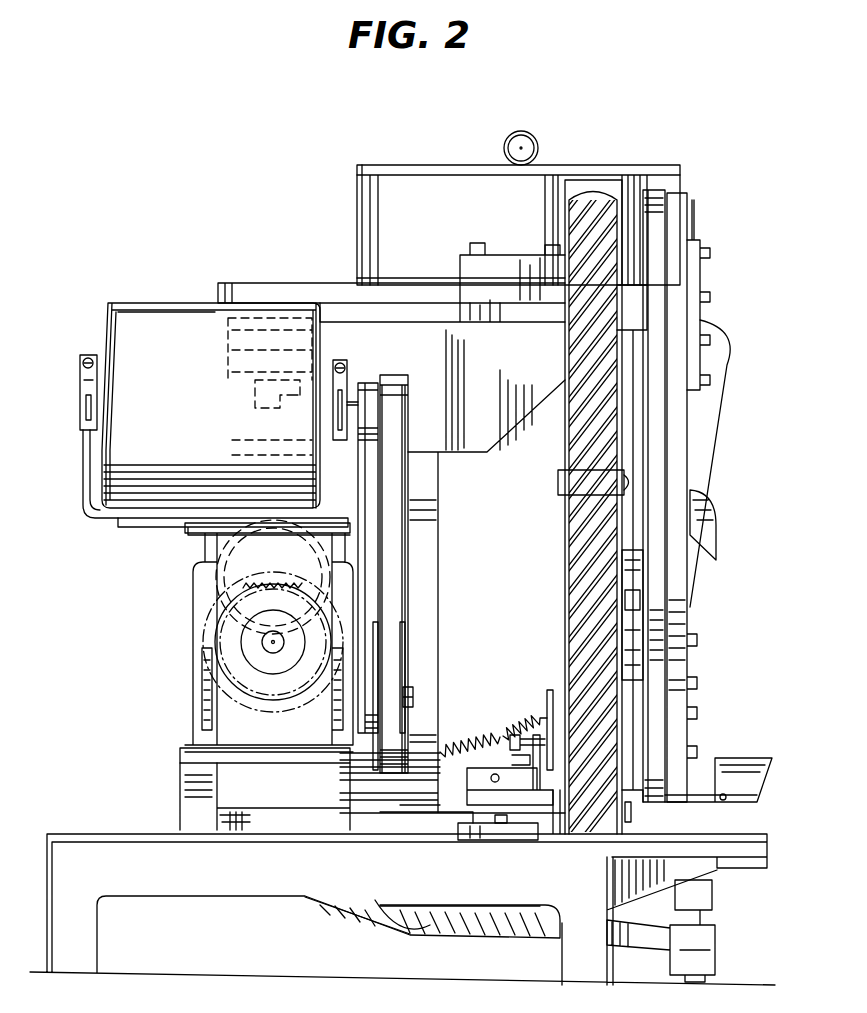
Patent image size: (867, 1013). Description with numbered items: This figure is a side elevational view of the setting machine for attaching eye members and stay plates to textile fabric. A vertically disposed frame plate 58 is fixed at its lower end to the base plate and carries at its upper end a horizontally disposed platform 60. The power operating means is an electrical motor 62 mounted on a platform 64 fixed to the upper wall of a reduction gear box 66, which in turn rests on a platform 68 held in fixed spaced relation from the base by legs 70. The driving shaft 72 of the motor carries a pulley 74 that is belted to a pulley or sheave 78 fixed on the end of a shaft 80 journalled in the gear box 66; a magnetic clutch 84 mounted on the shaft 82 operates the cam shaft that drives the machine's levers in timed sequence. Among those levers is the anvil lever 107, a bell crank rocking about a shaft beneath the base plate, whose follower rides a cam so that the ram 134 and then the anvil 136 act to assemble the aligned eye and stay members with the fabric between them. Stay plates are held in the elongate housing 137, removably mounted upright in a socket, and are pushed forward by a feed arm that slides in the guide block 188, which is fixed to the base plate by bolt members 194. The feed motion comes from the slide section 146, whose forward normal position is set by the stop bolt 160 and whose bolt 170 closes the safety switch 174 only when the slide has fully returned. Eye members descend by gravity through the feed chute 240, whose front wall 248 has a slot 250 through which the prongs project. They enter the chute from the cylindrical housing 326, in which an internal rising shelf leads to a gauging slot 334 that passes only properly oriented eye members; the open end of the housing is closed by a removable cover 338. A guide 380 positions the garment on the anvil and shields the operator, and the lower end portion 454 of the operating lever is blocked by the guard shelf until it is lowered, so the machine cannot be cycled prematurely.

The cylindrical housing 326 is at (352, 206).
The removable cover 338 is at (416, 166).
The slot 334 is at (690, 195).
The platform 60 is at (466, 306).
The electrical motor 62 is at (190, 380).
The driving shaft 72 is at (354, 403).
The pulley 74 is at (404, 438).
The ram 134 is at (702, 422).
The feed chute 240 is at (676, 474).
The elongate housing 137 is at (560, 533).
The frame plate 58 is at (428, 580).
The slot 250 is at (662, 578).
The platform 64 is at (130, 528).
The reduction gear box 66 is at (220, 578).
The shaft 82 is at (270, 641).
The magnetic clutch 84 is at (210, 627).
The pulley or sheave 78 is at (403, 642).
The shaft 80 is at (418, 692).
The front wall 248 is at (660, 664).
The switch 174 is at (546, 696).
The bolt 170 is at (500, 730).
The slide section 146 is at (458, 765).
The stop bolt 160 is at (510, 758).
The guide 380 is at (755, 757).
The platform 68 is at (195, 748).
The legs 70 is at (178, 789).
The lower end portion 454 is at (633, 818).
The bolt members 194 is at (500, 830).
The guide block 188 is at (528, 830).
The anvil 136 is at (712, 900).
The anvil lever 107 is at (498, 937).